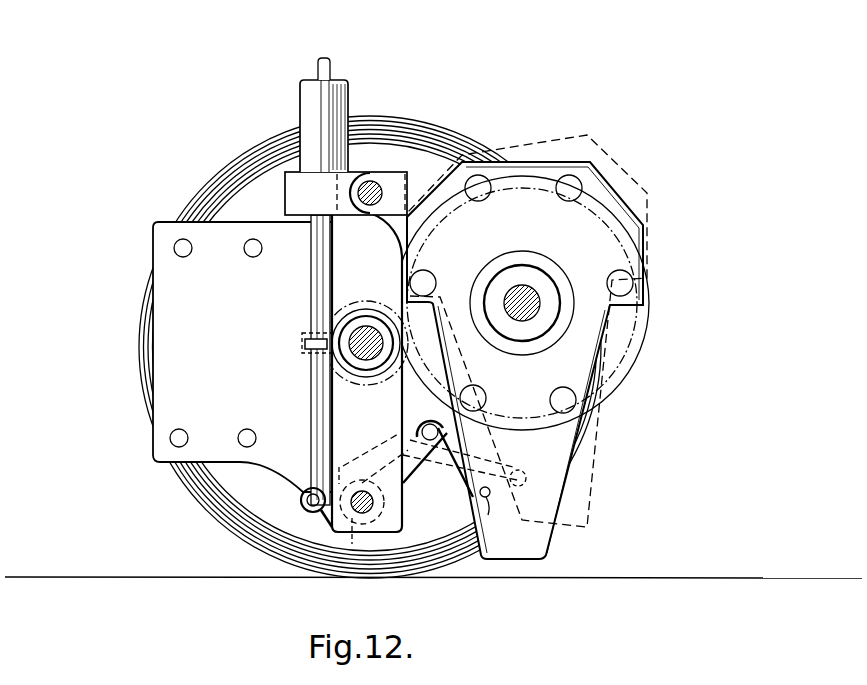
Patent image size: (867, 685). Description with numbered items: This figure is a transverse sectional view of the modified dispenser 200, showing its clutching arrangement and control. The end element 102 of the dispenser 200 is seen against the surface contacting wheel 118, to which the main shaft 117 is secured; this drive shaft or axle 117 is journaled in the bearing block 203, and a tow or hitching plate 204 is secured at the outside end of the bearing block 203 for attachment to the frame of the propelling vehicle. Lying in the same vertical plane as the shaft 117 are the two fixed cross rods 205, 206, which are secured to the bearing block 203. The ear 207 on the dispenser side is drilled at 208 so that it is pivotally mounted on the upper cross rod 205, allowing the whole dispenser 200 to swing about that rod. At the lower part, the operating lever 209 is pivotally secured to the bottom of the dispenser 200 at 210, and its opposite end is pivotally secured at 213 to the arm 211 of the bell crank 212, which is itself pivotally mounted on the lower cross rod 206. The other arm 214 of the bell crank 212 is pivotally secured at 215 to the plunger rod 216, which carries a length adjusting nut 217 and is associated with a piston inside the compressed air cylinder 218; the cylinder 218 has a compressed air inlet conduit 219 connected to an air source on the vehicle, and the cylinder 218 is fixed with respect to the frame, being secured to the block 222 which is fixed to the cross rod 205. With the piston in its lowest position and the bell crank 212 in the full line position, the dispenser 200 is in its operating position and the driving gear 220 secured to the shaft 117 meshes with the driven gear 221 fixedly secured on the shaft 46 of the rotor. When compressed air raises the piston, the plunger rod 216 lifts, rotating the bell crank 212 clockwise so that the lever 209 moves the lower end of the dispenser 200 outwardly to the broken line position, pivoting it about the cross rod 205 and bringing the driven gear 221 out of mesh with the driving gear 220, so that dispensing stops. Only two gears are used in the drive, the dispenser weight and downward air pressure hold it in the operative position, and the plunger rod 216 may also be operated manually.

The shaft 46 is at (532, 312).
The end element 102 is at (585, 270).
The main shaft 117 is at (367, 360).
The surface contacting wheel 118 is at (203, 492).
The dispenser 200 is at (619, 195).
The bearing block 203 is at (380, 186).
The tow plate 204 is at (201, 259).
The cross rod 205 is at (372, 180).
The cross rod 206 is at (375, 502).
The ear 207 is at (397, 204).
The drilled hole 208 is at (468, 152).
The operating lever 209 is at (462, 457).
The pivot 210 is at (489, 511).
The arm 211 is at (400, 460).
The bell crank 212 is at (361, 540).
The pivot 213 is at (432, 424).
The arm 214 is at (350, 464).
The pivot 215 is at (313, 512).
The plunger rod 216 is at (312, 390).
The length adjusting nut 217 is at (305, 343).
The compressed air cylinder 218 is at (307, 100).
The compressed air inlet conduit 219 is at (320, 70).
The driving gear 220 is at (360, 303).
The driven gear 221 is at (432, 223).
The block 222 is at (290, 176).